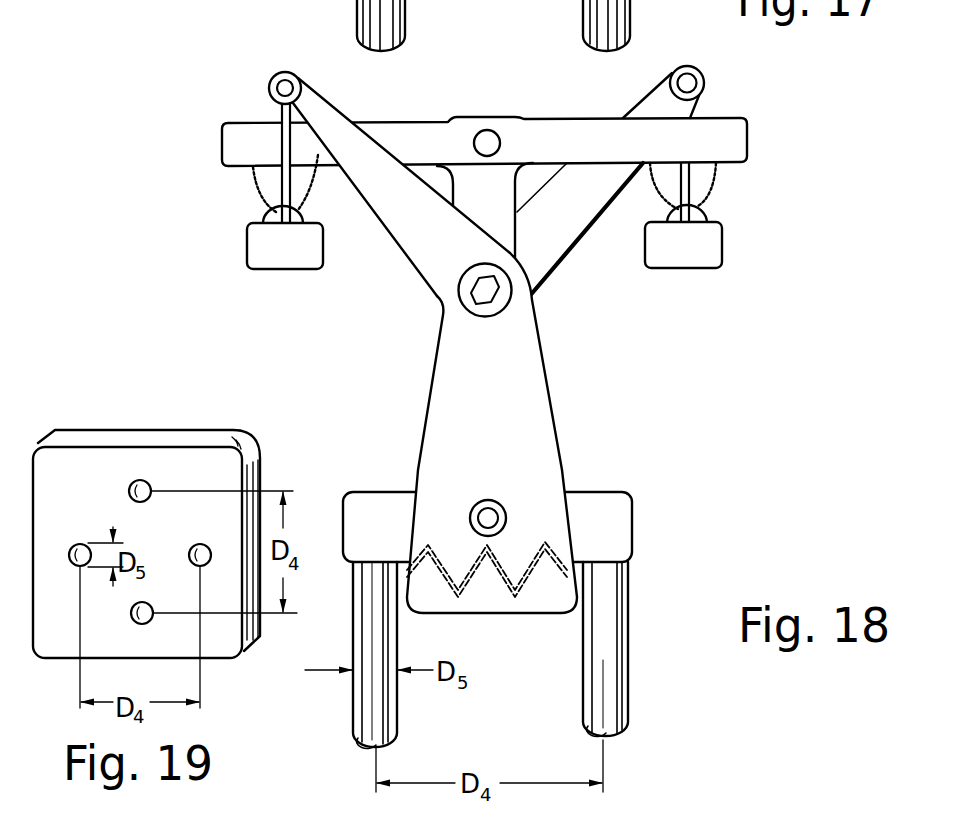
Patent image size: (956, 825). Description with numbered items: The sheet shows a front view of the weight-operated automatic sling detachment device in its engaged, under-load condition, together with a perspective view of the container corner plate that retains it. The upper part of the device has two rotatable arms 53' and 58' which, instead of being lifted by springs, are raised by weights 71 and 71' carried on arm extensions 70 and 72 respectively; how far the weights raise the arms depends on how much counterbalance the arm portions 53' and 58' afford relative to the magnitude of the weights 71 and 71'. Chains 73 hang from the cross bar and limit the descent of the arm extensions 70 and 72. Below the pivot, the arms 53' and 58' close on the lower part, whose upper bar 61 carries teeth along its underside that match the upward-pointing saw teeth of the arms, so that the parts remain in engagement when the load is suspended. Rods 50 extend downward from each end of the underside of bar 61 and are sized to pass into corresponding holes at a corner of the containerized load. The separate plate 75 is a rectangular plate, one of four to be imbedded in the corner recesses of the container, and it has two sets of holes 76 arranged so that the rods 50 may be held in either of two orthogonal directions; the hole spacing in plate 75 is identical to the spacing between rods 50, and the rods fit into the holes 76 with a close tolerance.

In FIG. 18, the arm extension 70 is at (320, 92).
In FIG. 18, the weight 71 is at (233, 206).
In FIG. 18, the weight 71' is at (737, 236).
In FIG. 18, the arm extension 72 is at (668, 77).
In FIG. 18, the chains 73 is at (713, 182).
In FIG. 18, the rotatable arm 58' is at (586, 254).
In FIG. 18, the rotatable arm 53' is at (455, 433).
In FIG. 18, the upper bar 61 is at (587, 490).
In FIG. 18, the rods 50 is at (623, 687).
In FIG. 19, the imbedded plate 75 is at (197, 430).
In FIG. 19, the holes 76 is at (135, 480).